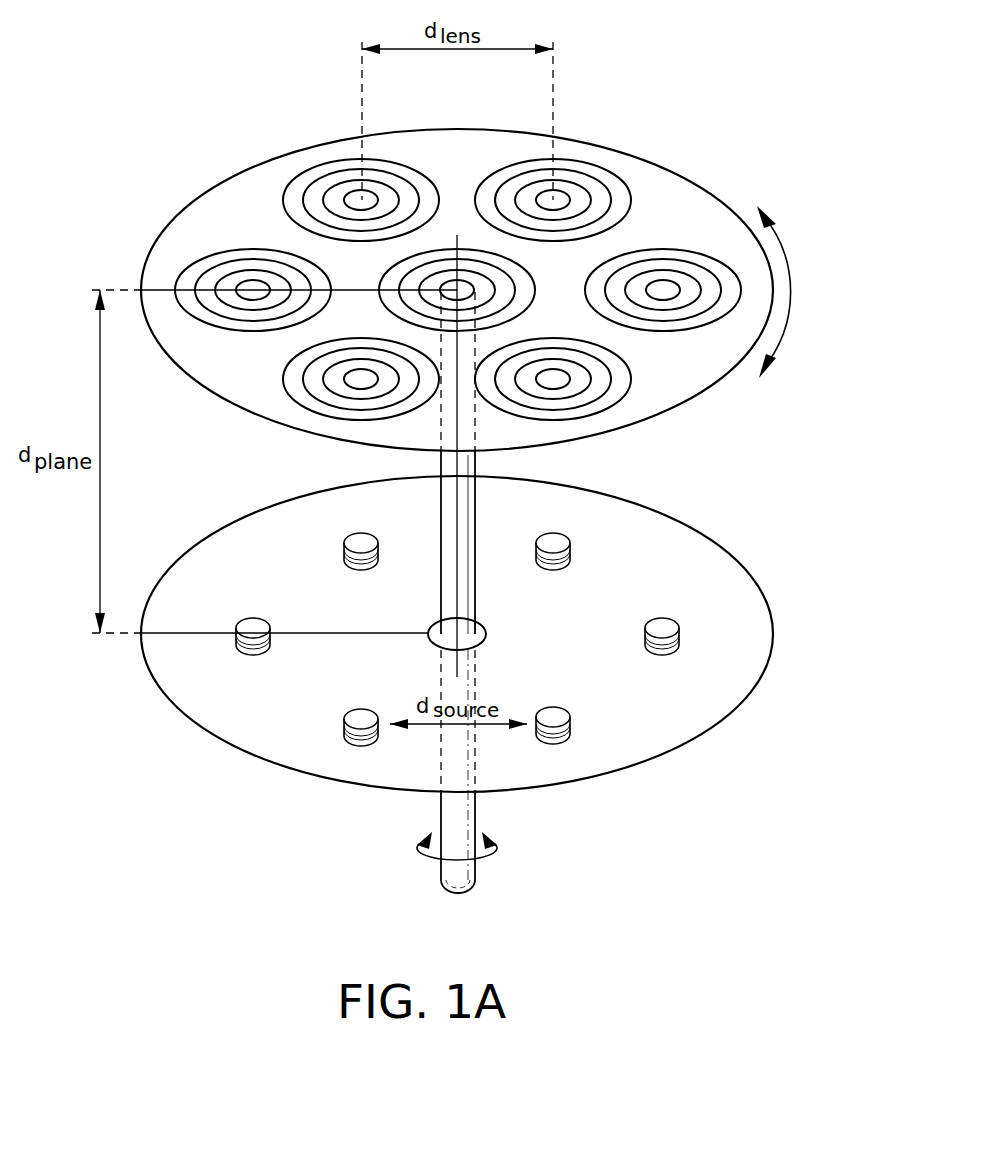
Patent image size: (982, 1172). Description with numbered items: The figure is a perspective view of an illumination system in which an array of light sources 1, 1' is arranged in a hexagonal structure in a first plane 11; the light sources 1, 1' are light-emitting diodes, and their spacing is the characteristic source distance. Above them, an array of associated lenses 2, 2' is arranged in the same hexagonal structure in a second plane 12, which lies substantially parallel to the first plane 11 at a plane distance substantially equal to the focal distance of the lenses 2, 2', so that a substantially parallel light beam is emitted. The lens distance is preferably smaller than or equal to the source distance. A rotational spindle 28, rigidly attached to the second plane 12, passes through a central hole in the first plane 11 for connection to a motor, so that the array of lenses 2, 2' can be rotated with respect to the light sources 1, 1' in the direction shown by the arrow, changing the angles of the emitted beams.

The second plane 12 is at (228, 198).
The lens 2 is at (663, 266).
The lens 2' is at (554, 408).
The first plane 11 is at (695, 720).
The light source 1 is at (662, 610).
The light source 1' is at (553, 699).
The rotational spindle 28 is at (447, 580).